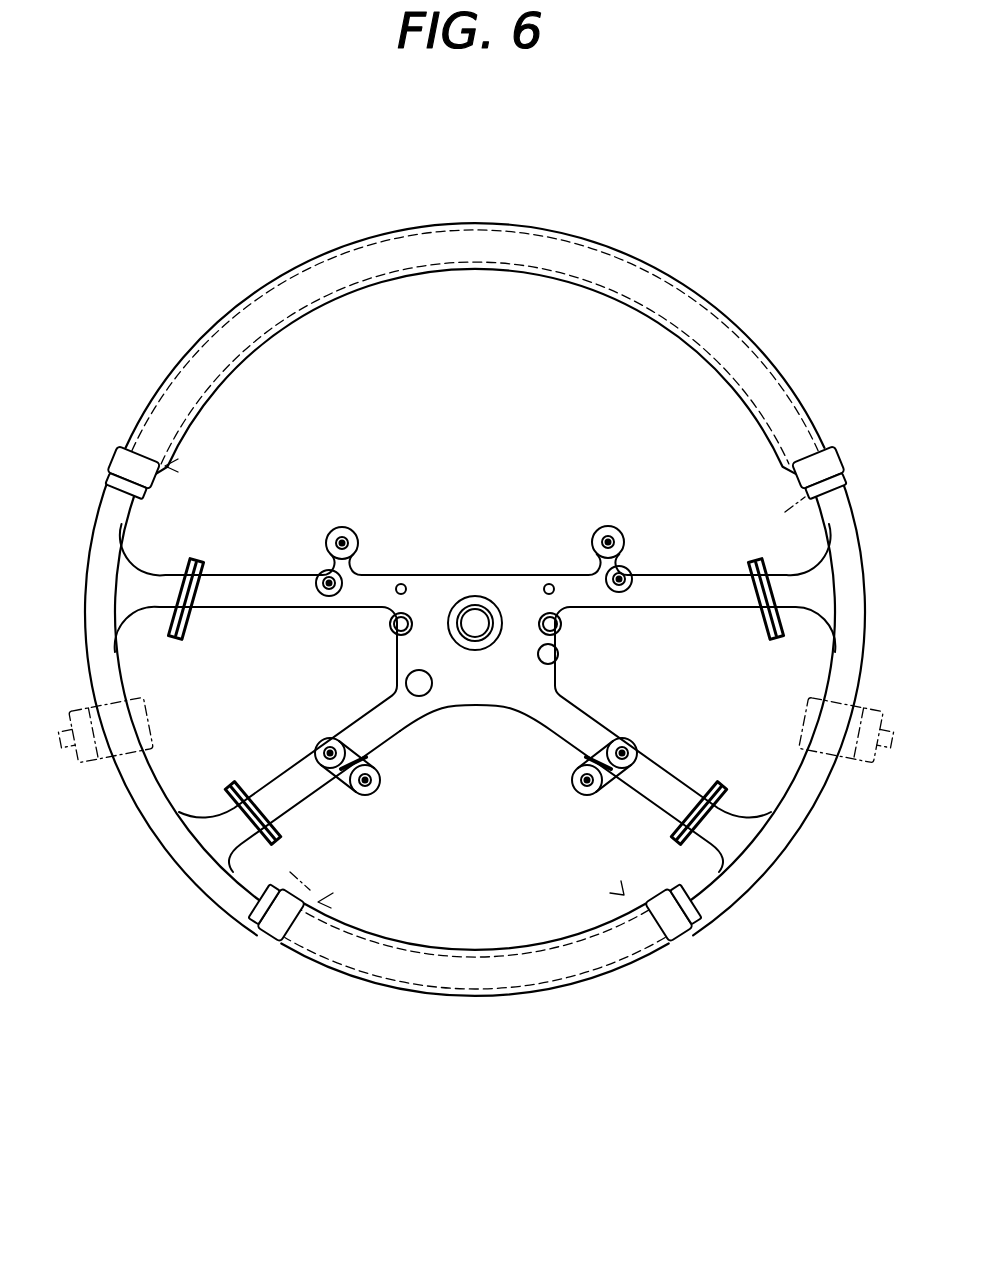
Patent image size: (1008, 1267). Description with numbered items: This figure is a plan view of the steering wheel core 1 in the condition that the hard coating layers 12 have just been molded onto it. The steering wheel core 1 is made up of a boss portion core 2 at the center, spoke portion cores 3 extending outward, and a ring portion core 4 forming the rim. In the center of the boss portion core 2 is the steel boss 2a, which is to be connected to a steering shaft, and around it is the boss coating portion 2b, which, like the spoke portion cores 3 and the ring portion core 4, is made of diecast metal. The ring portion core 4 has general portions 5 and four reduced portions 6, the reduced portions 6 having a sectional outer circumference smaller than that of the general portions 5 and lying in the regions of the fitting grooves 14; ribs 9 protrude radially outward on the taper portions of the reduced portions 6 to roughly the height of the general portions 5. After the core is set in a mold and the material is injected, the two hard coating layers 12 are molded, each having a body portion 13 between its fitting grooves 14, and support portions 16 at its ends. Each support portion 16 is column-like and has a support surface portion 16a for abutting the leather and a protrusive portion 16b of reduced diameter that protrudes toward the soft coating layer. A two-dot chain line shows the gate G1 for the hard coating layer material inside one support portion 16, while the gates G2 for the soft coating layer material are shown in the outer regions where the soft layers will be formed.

The steering wheel core 1 is at (362, 384).
The boss portion core 2 is at (445, 518).
The boss 2a is at (472, 612).
The boss coating portion 2b is at (498, 606).
The spoke portion cores 3 is at (664, 585).
The ring portion core 4 is at (275, 335).
The general portions 5 is at (150, 787).
The reduced portions 6 is at (168, 466).
The ribs 9 is at (167, 375).
The hard coating layers 12 is at (463, 992).
The body portion 13 is at (596, 263).
The fitting grooves 14 is at (155, 472).
The support portions 16 is at (472, 721).
The support surface portion 16a is at (122, 462).
The protrusive portion 16b is at (248, 930).
The gate G1 is at (773, 507).
The gates G2 is at (82, 762).